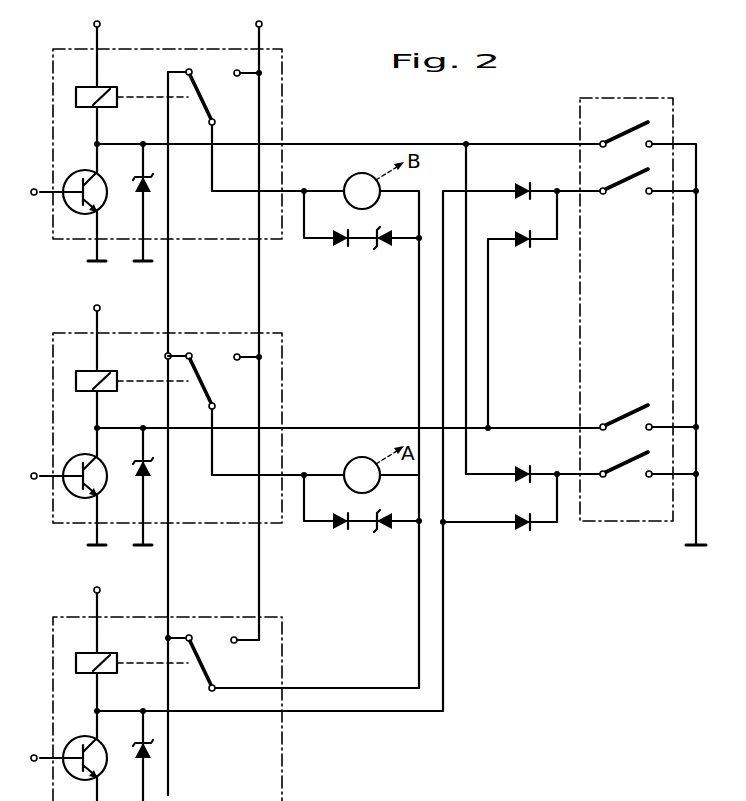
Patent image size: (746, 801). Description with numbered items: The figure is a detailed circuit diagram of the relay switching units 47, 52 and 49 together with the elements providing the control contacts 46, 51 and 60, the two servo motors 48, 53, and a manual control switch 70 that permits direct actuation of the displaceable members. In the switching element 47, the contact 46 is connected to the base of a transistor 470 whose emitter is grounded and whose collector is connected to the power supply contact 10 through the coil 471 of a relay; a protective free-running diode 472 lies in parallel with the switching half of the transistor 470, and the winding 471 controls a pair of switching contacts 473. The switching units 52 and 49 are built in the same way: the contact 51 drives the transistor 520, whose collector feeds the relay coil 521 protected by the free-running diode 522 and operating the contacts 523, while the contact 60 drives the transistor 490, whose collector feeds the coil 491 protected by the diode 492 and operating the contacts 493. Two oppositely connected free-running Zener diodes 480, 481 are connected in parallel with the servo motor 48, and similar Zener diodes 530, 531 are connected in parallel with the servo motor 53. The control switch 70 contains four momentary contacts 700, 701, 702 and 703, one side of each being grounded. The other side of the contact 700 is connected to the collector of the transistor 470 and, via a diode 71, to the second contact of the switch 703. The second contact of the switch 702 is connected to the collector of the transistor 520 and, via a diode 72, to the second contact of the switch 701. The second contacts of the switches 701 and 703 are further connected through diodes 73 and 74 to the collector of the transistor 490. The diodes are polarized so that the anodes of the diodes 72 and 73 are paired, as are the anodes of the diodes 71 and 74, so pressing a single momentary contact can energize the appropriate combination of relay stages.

The power supply contact 10 is at (101, 25).
The contact 46 is at (34, 196).
The switching element 47 is at (282, 84).
The transistor 470 is at (76, 182).
The relay coil 471 is at (107, 100).
The protective free-running diode 472 is at (138, 180).
The switching contacts 473 is at (206, 99).
The servo motor 48 is at (355, 177).
The free-running Zener diode 480 is at (337, 248).
The free-running Zener diode 481 is at (383, 248).
The switching unit 49 is at (283, 663).
The transistor 490 is at (73, 741).
The relay coil 491 is at (132, 676).
The protective free-running diode 492 is at (127, 756).
The switching contacts 493 is at (219, 663).
The contact 51 is at (39, 497).
The switching element 52 is at (282, 370).
The transistor 520 is at (73, 459).
The relay coil 521 is at (132, 394).
The protective free-running diode 522 is at (127, 486).
The switching contacts 523 is at (218, 386).
The servo motor 53 is at (352, 460).
The free-running Zener diode 530 is at (336, 531).
The free-running Zener diode 531 is at (383, 531).
The contact 60 is at (39, 778).
The control switch 70 is at (639, 99).
The momentary contact 700 is at (632, 127).
The momentary contact 701 is at (624, 178).
The momentary contact 702 is at (624, 428).
The momentary contact 703 is at (629, 477).
The diode 71 is at (522, 466).
The diode 72 is at (520, 247).
The diode 73 is at (517, 183).
The diode 74 is at (520, 531).